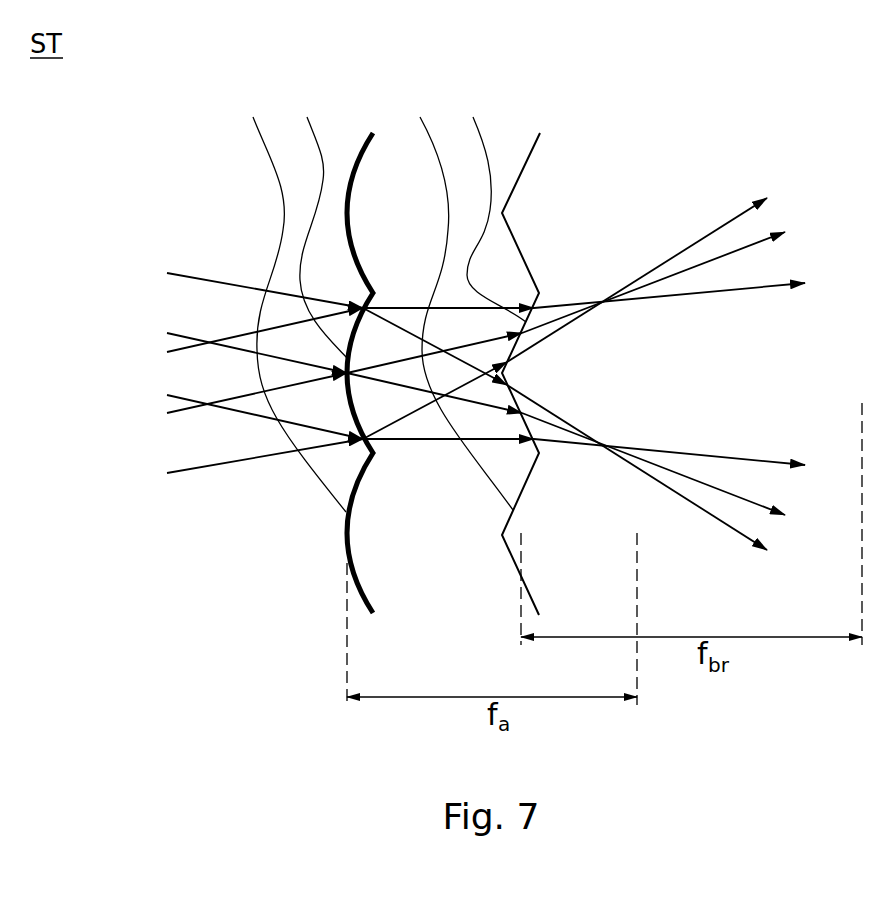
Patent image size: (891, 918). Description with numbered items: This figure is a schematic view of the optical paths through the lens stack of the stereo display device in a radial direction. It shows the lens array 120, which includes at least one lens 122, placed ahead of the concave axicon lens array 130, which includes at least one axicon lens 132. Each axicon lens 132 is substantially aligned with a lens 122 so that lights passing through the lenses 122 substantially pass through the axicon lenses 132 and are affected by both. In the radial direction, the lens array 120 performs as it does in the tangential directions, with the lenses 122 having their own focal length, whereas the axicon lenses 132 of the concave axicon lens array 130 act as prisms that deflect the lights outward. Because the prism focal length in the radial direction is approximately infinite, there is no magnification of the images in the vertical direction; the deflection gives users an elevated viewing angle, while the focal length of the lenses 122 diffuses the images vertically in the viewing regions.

The lens array 120 is at (213, 89).
The lens 122 is at (355, 166).
The concave axicon lens array 130 is at (392, 89).
The axicon lens 132 is at (522, 170).